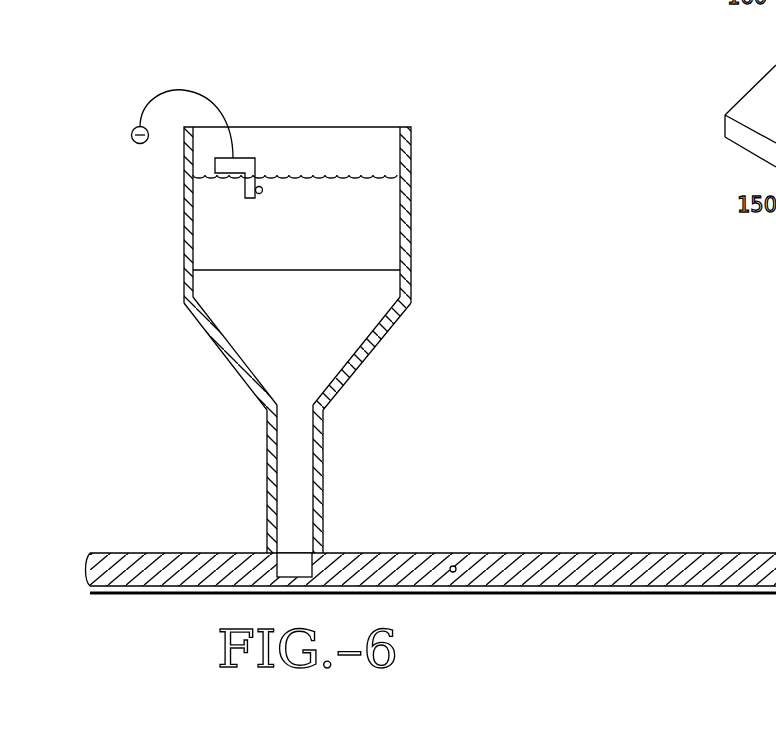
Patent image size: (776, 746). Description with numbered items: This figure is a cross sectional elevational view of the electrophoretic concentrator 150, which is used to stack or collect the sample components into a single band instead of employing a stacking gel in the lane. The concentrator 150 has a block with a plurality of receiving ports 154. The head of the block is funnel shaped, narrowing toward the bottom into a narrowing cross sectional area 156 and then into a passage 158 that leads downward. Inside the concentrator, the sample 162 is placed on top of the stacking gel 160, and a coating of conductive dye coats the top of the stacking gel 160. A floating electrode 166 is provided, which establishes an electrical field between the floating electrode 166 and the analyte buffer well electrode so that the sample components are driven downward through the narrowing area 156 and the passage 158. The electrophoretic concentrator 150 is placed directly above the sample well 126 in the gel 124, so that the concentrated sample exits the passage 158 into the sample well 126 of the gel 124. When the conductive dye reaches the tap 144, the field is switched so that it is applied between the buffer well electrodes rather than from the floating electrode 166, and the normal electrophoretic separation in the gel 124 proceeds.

The gel 124 is at (625, 568).
The sample well 126 is at (292, 555).
The tap 144 is at (453, 565).
The electrophoretic concentrator 150 is at (412, 227).
The receiving ports 154 is at (350, 152).
The narrowing cross sectional area 156 is at (320, 367).
The passage 158 is at (292, 482).
The stacking gel 160 is at (282, 380).
The sample 162 is at (215, 228).
The floating electrode 166 is at (243, 160).